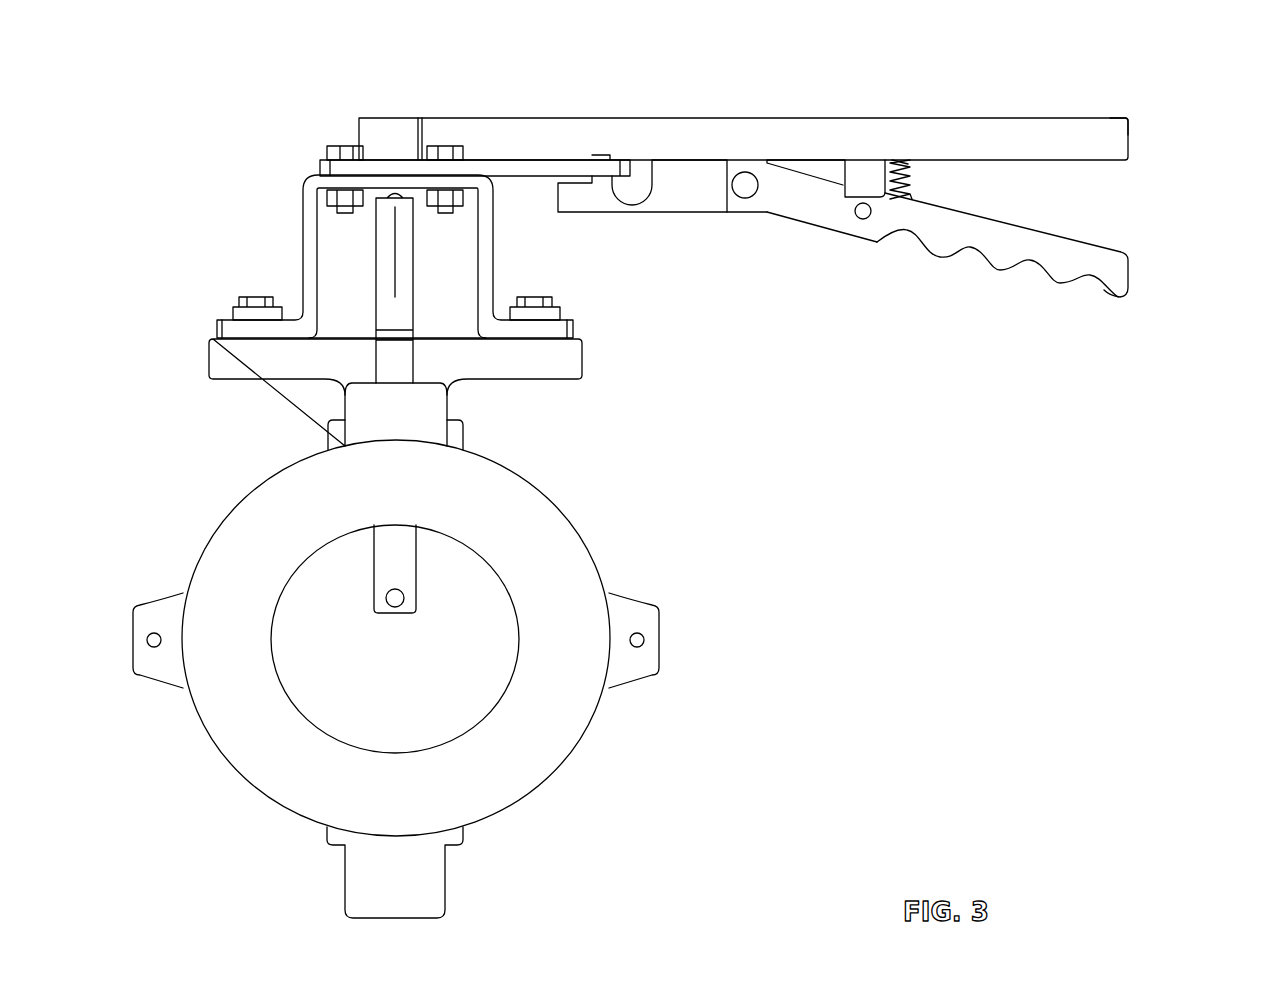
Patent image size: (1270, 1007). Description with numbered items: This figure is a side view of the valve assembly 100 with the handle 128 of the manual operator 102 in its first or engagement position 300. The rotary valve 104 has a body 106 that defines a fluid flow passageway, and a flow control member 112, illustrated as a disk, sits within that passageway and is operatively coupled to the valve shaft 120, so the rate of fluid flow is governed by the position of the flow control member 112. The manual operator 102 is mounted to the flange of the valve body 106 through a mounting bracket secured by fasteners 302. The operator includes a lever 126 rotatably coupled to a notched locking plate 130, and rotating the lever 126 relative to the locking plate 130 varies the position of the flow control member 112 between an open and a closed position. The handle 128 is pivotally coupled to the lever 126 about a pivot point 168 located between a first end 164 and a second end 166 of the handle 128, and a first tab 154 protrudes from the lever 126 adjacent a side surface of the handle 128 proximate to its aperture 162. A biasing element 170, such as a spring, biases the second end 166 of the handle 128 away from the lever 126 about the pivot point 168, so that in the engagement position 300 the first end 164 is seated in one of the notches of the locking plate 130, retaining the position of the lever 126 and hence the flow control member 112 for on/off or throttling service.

The valve assembly 100 is at (1160, 88).
The manual operator 102 is at (829, 106).
The rotary valve 104 is at (443, 628).
The body 106 is at (552, 780).
The flow control member 112 is at (332, 613).
The valve shaft 120 is at (375, 273).
The lever 126 is at (997, 118).
The handle 128 is at (1003, 262).
The locking plate 130 is at (325, 168).
The first tab 154 is at (860, 187).
The aperture 162 is at (857, 217).
The first end 164 is at (590, 213).
The second end 166 is at (985, 247).
The pivot point 168 is at (745, 186).
The biasing element 170 is at (911, 178).
The engagement position 300 is at (1131, 208).
The fasteners 302 is at (258, 297).